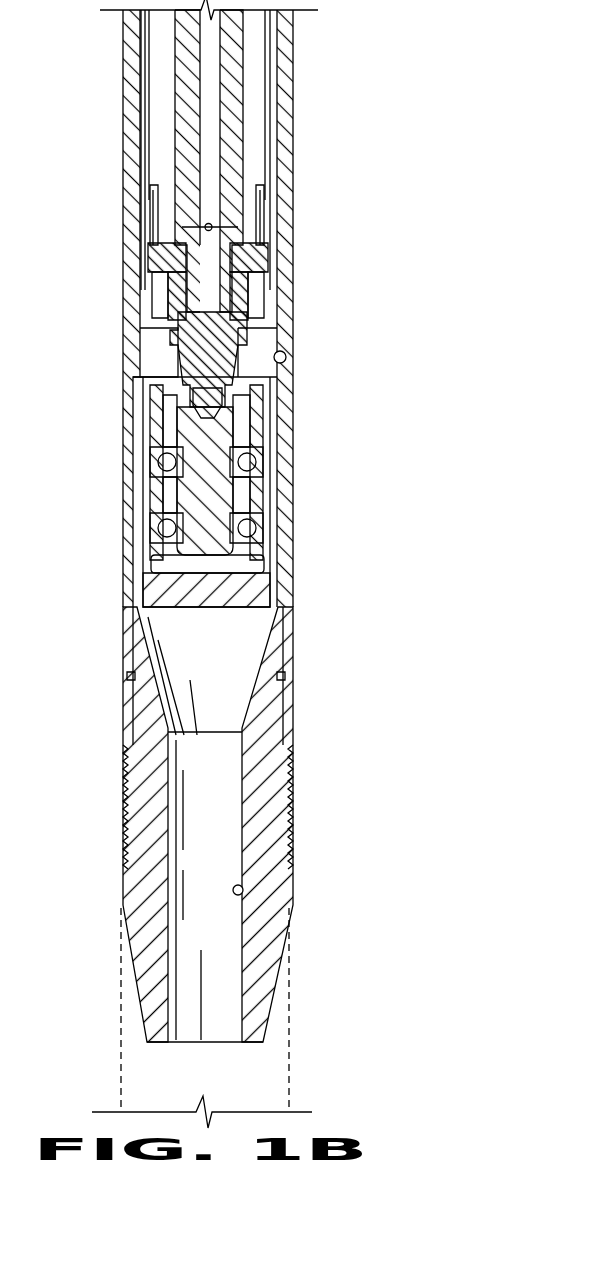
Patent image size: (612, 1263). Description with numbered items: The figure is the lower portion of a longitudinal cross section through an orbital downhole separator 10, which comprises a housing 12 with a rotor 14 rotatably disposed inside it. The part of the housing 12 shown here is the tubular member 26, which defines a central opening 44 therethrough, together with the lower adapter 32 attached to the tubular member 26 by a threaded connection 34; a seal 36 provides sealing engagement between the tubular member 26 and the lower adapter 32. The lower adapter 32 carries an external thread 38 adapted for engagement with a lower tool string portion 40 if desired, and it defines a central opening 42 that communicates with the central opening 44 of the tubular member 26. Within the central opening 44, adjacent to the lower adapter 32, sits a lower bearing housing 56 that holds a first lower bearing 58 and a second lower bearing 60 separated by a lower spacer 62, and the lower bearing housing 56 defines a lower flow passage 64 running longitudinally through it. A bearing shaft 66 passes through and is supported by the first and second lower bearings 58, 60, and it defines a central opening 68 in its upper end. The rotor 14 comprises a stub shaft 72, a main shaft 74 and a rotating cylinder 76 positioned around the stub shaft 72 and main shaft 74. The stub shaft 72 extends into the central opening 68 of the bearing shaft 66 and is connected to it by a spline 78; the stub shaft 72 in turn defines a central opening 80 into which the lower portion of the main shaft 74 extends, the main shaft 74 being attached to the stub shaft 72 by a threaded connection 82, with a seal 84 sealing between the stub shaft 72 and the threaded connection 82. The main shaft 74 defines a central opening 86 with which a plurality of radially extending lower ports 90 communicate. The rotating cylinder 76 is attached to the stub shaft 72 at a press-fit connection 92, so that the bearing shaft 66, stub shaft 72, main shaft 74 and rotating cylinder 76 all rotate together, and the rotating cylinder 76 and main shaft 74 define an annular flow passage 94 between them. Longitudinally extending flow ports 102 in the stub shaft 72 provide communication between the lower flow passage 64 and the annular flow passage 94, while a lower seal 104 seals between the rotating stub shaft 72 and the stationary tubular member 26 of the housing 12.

The orbital downhole separator 10 is at (318, 238).
The housing 12 is at (297, 147).
The rotor 14 is at (277, 78).
The tubular member 26 is at (286, 103).
The lower adapter 32 is at (135, 892).
The threaded connection 34 is at (287, 792).
The seal 36 is at (286, 677).
The external thread 38 is at (266, 1015).
The lower tool string portion 40 is at (120, 1016).
The central opening 42 is at (244, 893).
The central opening 44 is at (287, 358).
The lower bearing housing 56 is at (165, 597).
The first lower bearing 58 is at (160, 461).
The second lower bearing 60 is at (165, 527).
The lower spacer 62 is at (165, 490).
The lower flow passage 64 is at (272, 550).
The bearing shaft 66 is at (218, 503).
The central opening 68 is at (272, 397).
The stub shaft 72 is at (172, 320).
The main shaft 74 is at (238, 42).
The rotating cylinder 76 is at (145, 103).
The spline 78 is at (180, 352).
The central opening 80 is at (170, 247).
The threaded connection 82 is at (158, 266).
The seal 84 is at (268, 258).
The central opening 86 is at (200, 52).
The lower ports 90 is at (160, 192).
The press-fit connection 92 is at (270, 192).
The annular flow passage 94 is at (158, 157).
The flow ports 102 is at (272, 335).
The lower seal 104 is at (270, 292).